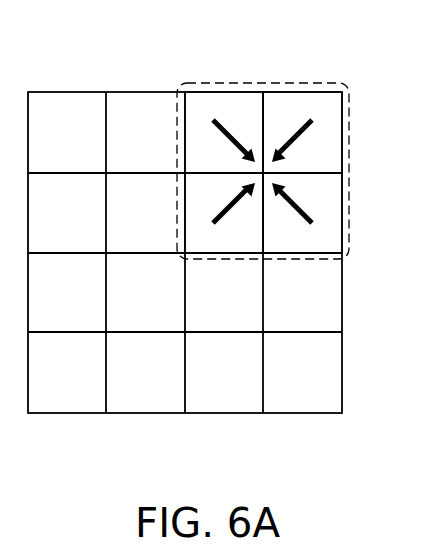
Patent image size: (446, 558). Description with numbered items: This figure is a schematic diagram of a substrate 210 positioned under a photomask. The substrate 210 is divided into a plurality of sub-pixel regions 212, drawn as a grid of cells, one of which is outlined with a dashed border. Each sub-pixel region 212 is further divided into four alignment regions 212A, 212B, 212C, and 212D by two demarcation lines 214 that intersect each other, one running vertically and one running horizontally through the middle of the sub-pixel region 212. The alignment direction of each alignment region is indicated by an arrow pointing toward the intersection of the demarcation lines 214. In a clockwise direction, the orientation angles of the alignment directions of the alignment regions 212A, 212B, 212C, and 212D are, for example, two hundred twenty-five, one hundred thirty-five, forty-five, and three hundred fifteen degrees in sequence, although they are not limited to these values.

The substrate 210 is at (305, 413).
The sub-pixel region 212 is at (333, 259).
The alignment region 212A is at (302, 93).
The alignment region 212B is at (197, 93).
The alignment region 212C is at (205, 245).
The alignment region 212D is at (275, 245).
The demarcation line 214 is at (263, 106).